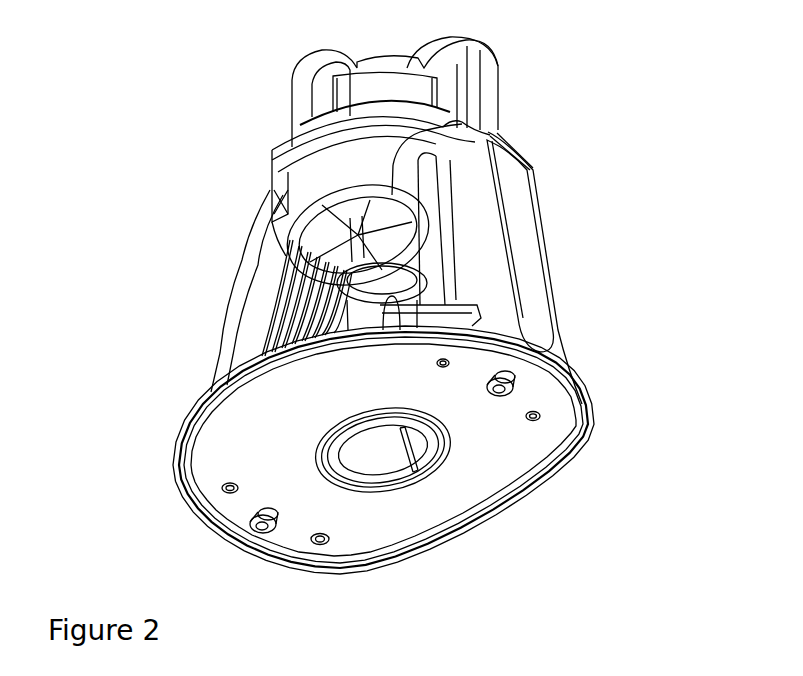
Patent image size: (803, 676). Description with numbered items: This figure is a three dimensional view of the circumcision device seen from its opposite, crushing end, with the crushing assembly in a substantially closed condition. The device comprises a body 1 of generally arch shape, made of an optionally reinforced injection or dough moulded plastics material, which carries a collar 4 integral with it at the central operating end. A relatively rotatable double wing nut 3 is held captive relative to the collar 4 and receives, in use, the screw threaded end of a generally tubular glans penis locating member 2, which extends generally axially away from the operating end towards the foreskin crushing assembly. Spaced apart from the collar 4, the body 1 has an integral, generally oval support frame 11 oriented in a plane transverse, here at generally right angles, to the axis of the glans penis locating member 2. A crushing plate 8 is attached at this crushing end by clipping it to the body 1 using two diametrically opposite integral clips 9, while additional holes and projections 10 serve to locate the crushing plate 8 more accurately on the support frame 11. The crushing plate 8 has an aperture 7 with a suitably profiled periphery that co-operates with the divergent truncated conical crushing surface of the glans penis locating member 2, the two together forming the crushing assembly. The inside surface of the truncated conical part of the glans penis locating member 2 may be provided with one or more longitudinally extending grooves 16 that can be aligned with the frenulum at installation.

The body 1 is at (487, 253).
The glans penis locating member 2 is at (380, 295).
The double wing nut 3 is at (472, 73).
The collar 4 is at (347, 155).
The aperture 7 is at (453, 458).
The crushing plate 8 is at (510, 439).
The integral clips 9 is at (250, 523).
The holes and projections 10 is at (222, 488).
The support frame 11 is at (190, 425).
The longitudinally extending grooves 16 is at (400, 490).